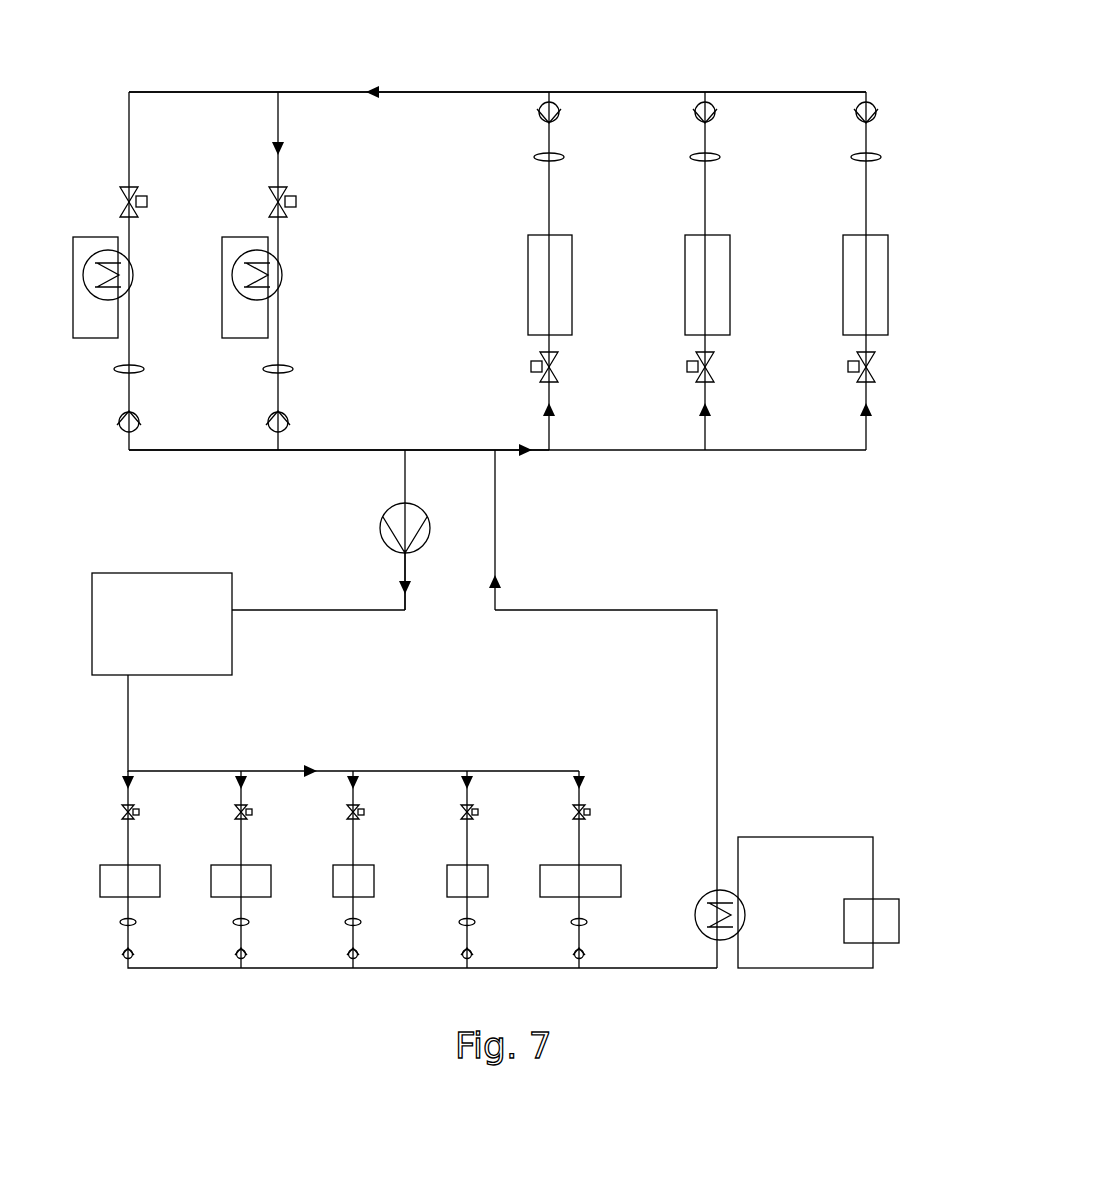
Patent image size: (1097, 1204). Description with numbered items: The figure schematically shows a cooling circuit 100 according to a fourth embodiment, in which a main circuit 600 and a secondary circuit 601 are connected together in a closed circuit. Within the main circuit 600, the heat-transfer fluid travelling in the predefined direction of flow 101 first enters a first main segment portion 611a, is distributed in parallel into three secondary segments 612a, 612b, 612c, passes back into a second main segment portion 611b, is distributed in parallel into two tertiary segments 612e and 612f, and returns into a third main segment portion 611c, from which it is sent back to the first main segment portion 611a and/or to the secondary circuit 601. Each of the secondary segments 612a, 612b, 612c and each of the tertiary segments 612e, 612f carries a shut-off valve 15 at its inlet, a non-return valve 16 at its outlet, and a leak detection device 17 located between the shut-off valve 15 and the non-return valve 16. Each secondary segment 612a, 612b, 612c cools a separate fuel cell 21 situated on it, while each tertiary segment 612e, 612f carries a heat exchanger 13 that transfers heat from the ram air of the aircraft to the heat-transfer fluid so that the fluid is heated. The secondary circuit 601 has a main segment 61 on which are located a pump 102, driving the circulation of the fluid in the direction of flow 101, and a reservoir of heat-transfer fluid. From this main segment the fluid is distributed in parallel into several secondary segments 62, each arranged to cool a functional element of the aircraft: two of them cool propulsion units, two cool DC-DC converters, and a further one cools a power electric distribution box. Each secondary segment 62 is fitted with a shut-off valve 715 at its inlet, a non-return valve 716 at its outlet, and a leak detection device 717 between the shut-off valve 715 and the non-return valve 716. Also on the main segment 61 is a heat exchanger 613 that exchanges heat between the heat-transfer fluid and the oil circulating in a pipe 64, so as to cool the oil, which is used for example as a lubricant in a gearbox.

The cooling circuit 100 is at (851, 58).
The main circuit 600 is at (250, 86).
The second main segment portion 611b is at (430, 90).
The tertiary segment 612f is at (132, 118).
The tertiary segment 612e is at (281, 118).
The secondary segment 612a is at (552, 428).
The secondary segment 612b is at (702, 436).
The secondary segment 612c is at (863, 436).
The shut-off valve 15 is at (148, 196).
The heat exchanger 13 is at (133, 269).
The leak detection device 17 is at (144, 367).
The non-return valve 16 is at (138, 418).
The fuel cell 21 is at (708, 285).
The third main segment portion 611c is at (370, 449).
The pump 102 is at (405, 503).
The predefined direction of flow 101 is at (392, 592).
The secondary circuit 601 is at (322, 596).
The first main segment portion 611a is at (498, 452).
The main segment 61 is at (585, 608).
The secondary segment 62 is at (131, 849).
The shut-off valve 715 is at (122, 806).
The leak detection device 717 is at (120, 922).
The non-return valve 716 is at (122, 955).
The heat exchanger 613 is at (706, 898).
The pipe 64 is at (874, 852).